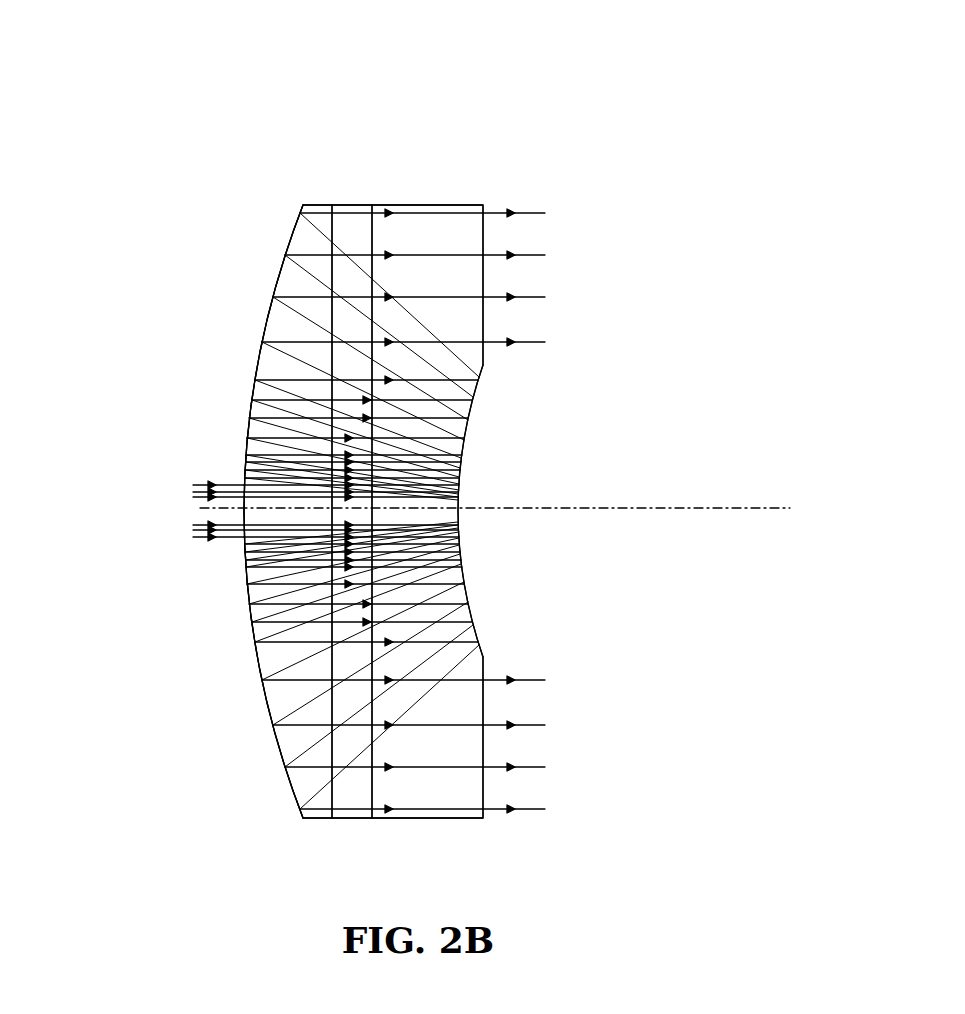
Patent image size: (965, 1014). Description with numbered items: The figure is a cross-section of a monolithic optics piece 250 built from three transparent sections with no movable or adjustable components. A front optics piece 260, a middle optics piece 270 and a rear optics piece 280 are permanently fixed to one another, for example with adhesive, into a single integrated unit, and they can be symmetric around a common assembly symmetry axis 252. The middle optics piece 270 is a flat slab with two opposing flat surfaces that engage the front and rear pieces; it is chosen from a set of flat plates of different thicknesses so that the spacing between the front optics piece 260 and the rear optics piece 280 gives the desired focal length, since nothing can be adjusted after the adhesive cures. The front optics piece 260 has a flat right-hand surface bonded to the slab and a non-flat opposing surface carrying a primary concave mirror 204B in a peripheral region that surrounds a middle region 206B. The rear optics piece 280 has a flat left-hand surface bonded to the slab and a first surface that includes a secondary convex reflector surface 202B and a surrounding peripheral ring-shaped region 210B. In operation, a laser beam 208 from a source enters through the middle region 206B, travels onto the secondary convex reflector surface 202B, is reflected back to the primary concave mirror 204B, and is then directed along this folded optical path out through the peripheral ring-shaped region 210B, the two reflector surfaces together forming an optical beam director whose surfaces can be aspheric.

The monolithic optics piece 250 is at (343, 825).
The front optics piece 260 is at (313, 202).
The middle optics piece 270 is at (360, 202).
The rear optics piece 280 is at (437, 202).
The primary concave mirror 204B is at (272, 268).
The secondary convex reflector surface 202B is at (463, 475).
The assembly symmetry axis 252 is at (563, 526).
The peripheral ring-shaped region 210B is at (483, 242).
The middle region 206B is at (245, 553).
The laser beam 208 is at (366, 511).